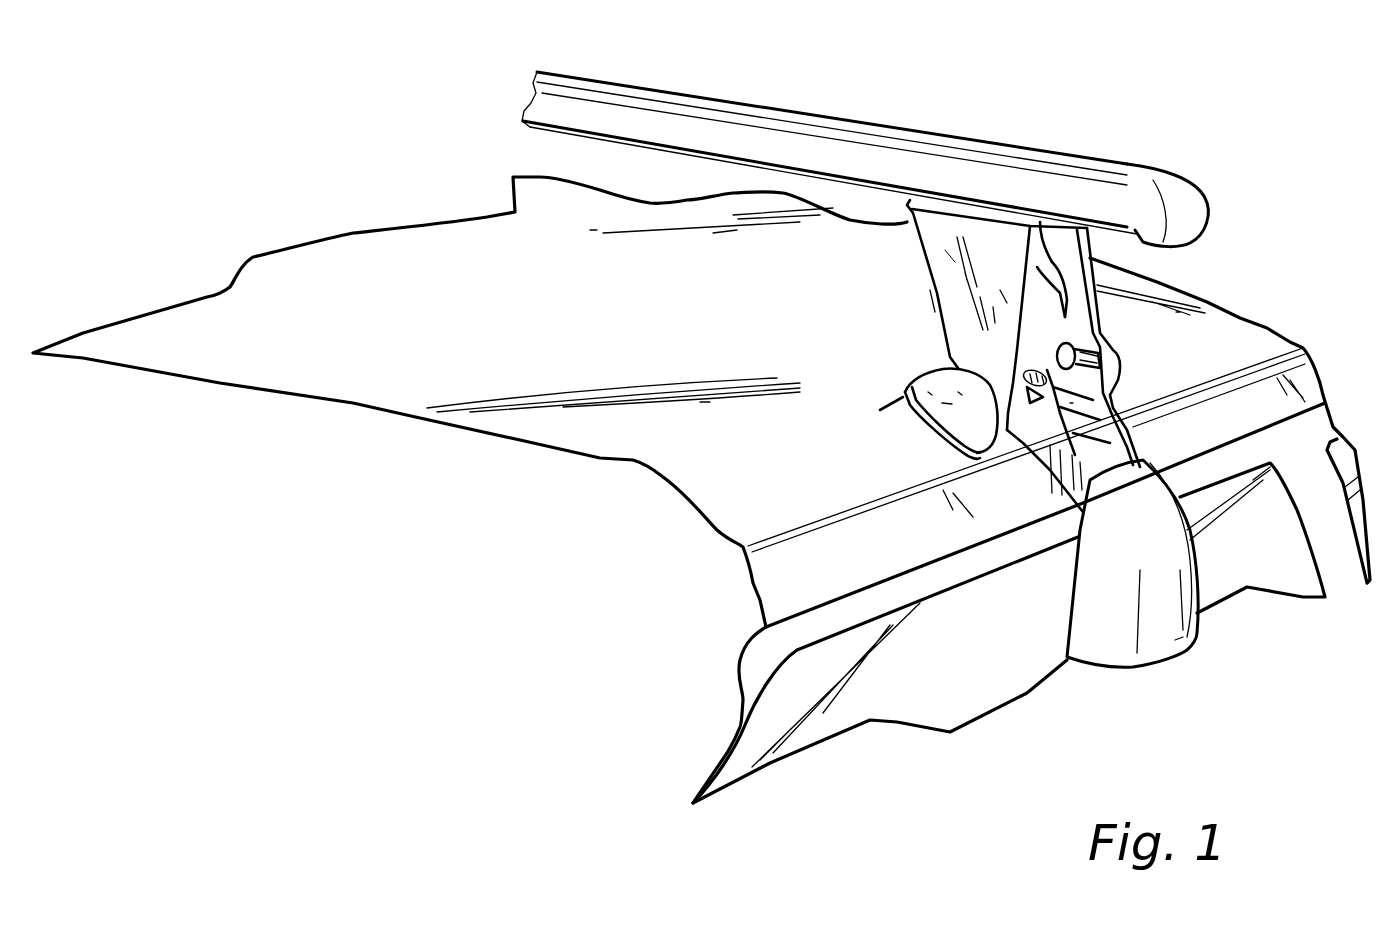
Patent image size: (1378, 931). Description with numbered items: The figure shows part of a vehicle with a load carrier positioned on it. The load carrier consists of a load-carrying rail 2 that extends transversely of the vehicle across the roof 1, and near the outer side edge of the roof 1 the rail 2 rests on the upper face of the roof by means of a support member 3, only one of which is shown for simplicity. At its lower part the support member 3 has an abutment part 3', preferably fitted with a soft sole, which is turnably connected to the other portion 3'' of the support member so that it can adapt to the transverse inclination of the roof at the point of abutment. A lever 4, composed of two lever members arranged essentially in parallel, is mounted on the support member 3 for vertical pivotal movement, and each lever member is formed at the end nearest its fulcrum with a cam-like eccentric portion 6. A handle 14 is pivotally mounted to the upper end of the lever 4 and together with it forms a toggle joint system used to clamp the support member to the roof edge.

The roof 1 is at (1233, 337).
The load-carrying rail 2 is at (843, 122).
The support member 3 is at (967, 315).
The other portion of the support member 3'' is at (880, 278).
The abutment part 3' is at (923, 414).
The lever 4 is at (1090, 436).
The cam-like eccentric portion 6 is at (1092, 330).
The handle 14 is at (1157, 603).